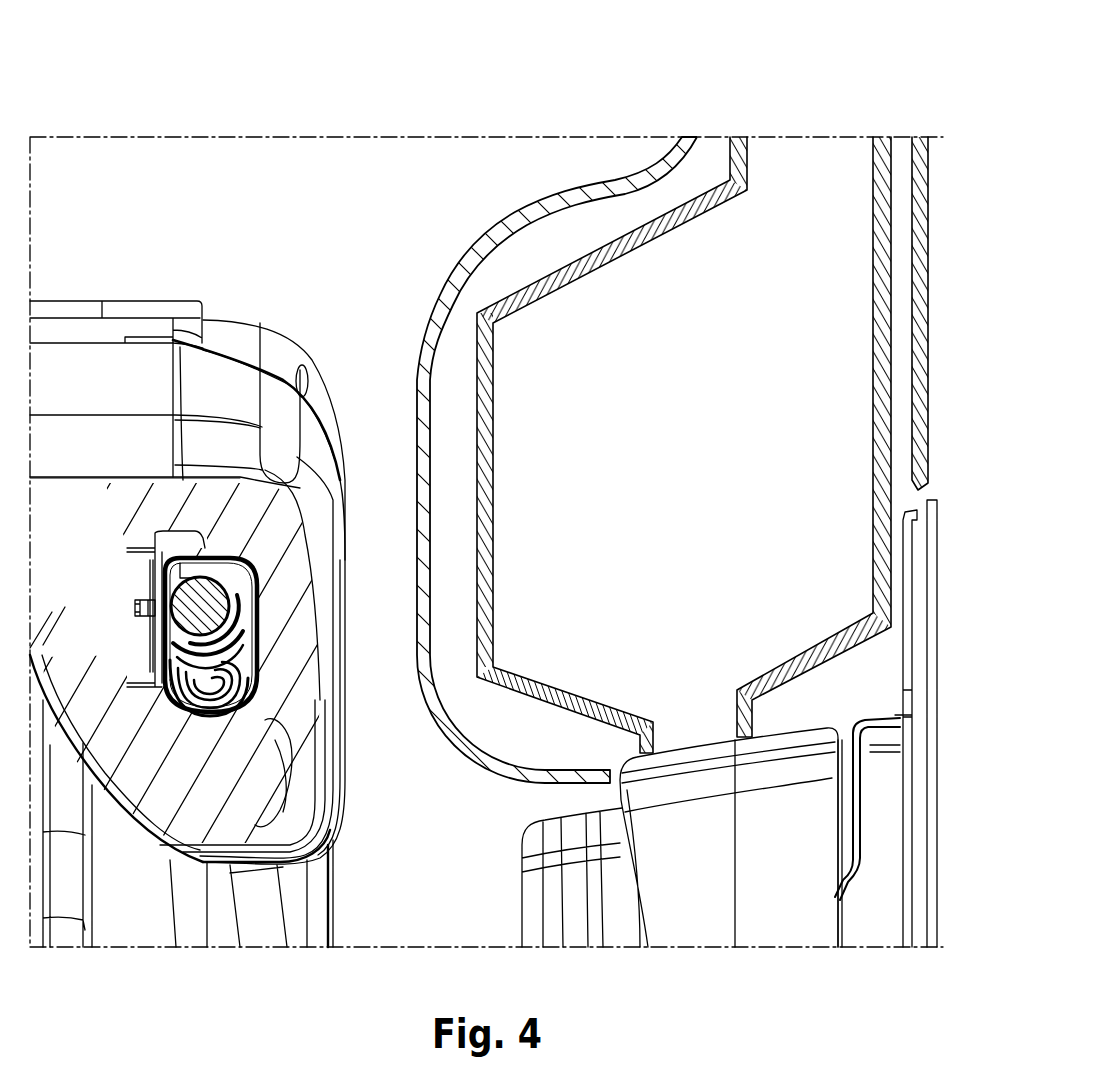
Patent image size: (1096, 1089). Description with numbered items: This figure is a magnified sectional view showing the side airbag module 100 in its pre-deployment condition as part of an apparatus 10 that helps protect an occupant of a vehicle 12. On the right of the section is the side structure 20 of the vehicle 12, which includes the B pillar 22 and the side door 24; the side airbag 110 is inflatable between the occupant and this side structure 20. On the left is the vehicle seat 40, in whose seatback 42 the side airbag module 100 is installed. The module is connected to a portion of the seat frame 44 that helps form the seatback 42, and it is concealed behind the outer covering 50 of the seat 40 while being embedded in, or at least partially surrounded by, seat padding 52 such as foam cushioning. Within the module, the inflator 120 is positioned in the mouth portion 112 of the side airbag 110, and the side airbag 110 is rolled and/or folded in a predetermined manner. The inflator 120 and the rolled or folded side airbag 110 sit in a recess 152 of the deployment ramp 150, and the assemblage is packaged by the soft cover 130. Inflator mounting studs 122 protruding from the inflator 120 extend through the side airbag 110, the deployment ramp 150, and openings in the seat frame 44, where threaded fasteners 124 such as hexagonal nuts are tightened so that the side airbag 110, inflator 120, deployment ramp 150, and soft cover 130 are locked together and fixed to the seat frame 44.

The apparatus 10 is at (350, 305).
The vehicle 12 is at (727, 92).
The side structure 20 is at (806, 190).
The B pillar 22 is at (515, 160).
The side door 24 is at (675, 783).
The vehicle seat 40 is at (305, 278).
The seatback 42 is at (127, 402).
The seat frame 44 is at (150, 578).
The outer covering 50 is at (323, 772).
The seat padding 52 is at (207, 802).
The side airbag module 100 is at (237, 612).
The side airbag 110 is at (248, 682).
The mouth portion 112 is at (165, 625).
The inflator 120 is at (203, 603).
The inflator mounting studs 122 is at (132, 606).
The threaded fasteners 124 is at (147, 602).
The soft cover 130 is at (242, 600).
The deployment ramp 150 is at (243, 625).
The recess 152 is at (246, 643).